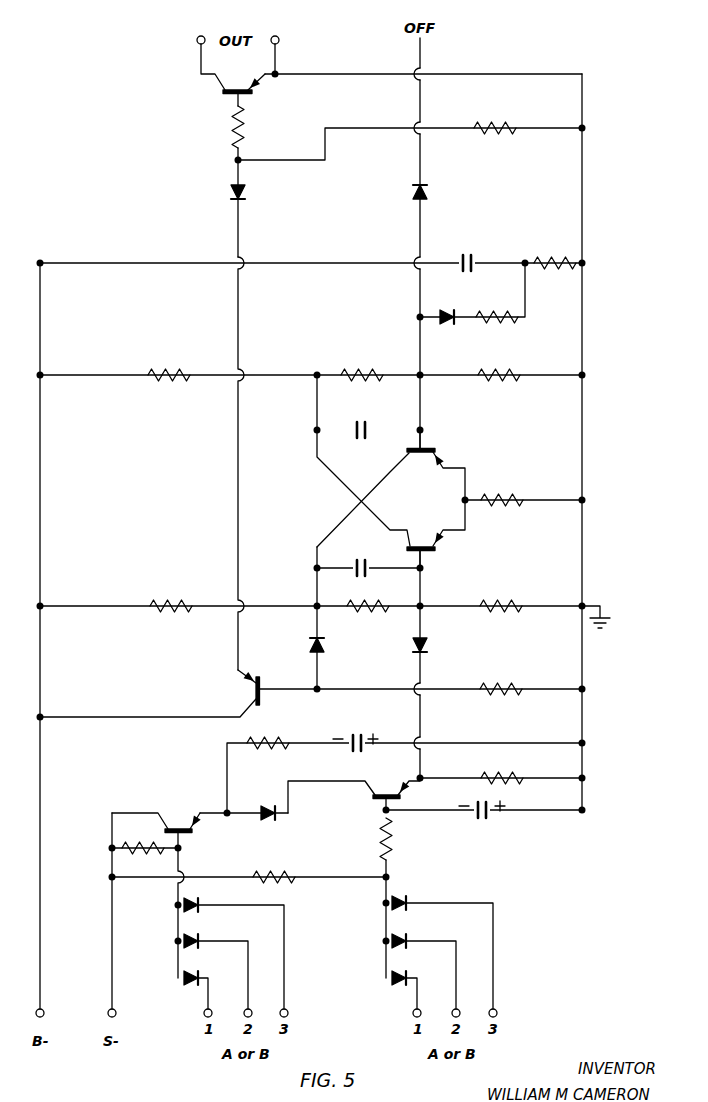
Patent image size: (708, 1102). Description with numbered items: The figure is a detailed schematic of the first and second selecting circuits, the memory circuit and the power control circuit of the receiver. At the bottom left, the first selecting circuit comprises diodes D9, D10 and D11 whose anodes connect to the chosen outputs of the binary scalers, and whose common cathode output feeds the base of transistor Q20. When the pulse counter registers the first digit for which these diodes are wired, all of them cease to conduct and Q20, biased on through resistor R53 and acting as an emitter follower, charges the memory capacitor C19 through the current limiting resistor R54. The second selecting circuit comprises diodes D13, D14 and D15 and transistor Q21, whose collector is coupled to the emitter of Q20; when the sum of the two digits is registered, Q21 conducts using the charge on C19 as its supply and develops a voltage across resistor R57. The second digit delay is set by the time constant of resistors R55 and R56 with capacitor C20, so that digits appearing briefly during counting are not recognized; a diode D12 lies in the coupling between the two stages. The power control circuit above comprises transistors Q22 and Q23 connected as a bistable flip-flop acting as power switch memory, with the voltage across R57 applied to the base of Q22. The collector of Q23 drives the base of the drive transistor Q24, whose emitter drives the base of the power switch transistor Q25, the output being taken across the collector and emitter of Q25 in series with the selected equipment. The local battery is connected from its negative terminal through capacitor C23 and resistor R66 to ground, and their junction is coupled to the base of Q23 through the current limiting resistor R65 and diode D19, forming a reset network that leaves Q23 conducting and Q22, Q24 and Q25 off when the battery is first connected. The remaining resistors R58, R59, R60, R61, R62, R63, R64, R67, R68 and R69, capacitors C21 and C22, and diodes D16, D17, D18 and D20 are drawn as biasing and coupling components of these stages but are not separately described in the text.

The power switch transistor Q25 is at (222, 95).
The resistor R68 is at (247, 127).
The resistor R69 is at (510, 114).
The diode D18 is at (249, 196).
The diode D20 is at (411, 193).
The capacitor C23 is at (465, 256).
The resistor R66 is at (558, 257).
The diode D19 is at (439, 316).
The current limiting resistor R65 is at (506, 311).
The resistor R64 is at (152, 369).
The resistor R63 is at (350, 370).
The resistor R62 is at (498, 370).
The capacitor C22 is at (356, 427).
The transistor Q23 is at (431, 450).
The transistor Q22 is at (428, 545).
The resistor R61 is at (493, 497).
The capacitor C21 is at (355, 565).
The resistor R59 is at (186, 603).
The resistor R58 is at (388, 610).
The resistor R60 is at (488, 603).
The diode D17 is at (310, 645).
The diode D16 is at (428, 648).
The resistor R67 is at (488, 686).
The transistor Q24 is at (254, 692).
The current limiting resistor R54 is at (268, 741).
The capacitor C19 is at (357, 740).
The resistor R57 is at (488, 775).
The transistor Q21 is at (372, 798).
The capacitor C20 is at (481, 820).
The resistor R56 is at (391, 849).
The diode D12 is at (270, 806).
The transistor Q20 is at (181, 826).
The resistor R53 is at (128, 846).
The resistor R55 is at (262, 874).
The diode D11 is at (200, 909).
The diode D10 is at (185, 946).
The diode D9 is at (186, 984).
The diode D15 is at (410, 907).
The diode D14 is at (393, 946).
The diode D13 is at (395, 984).